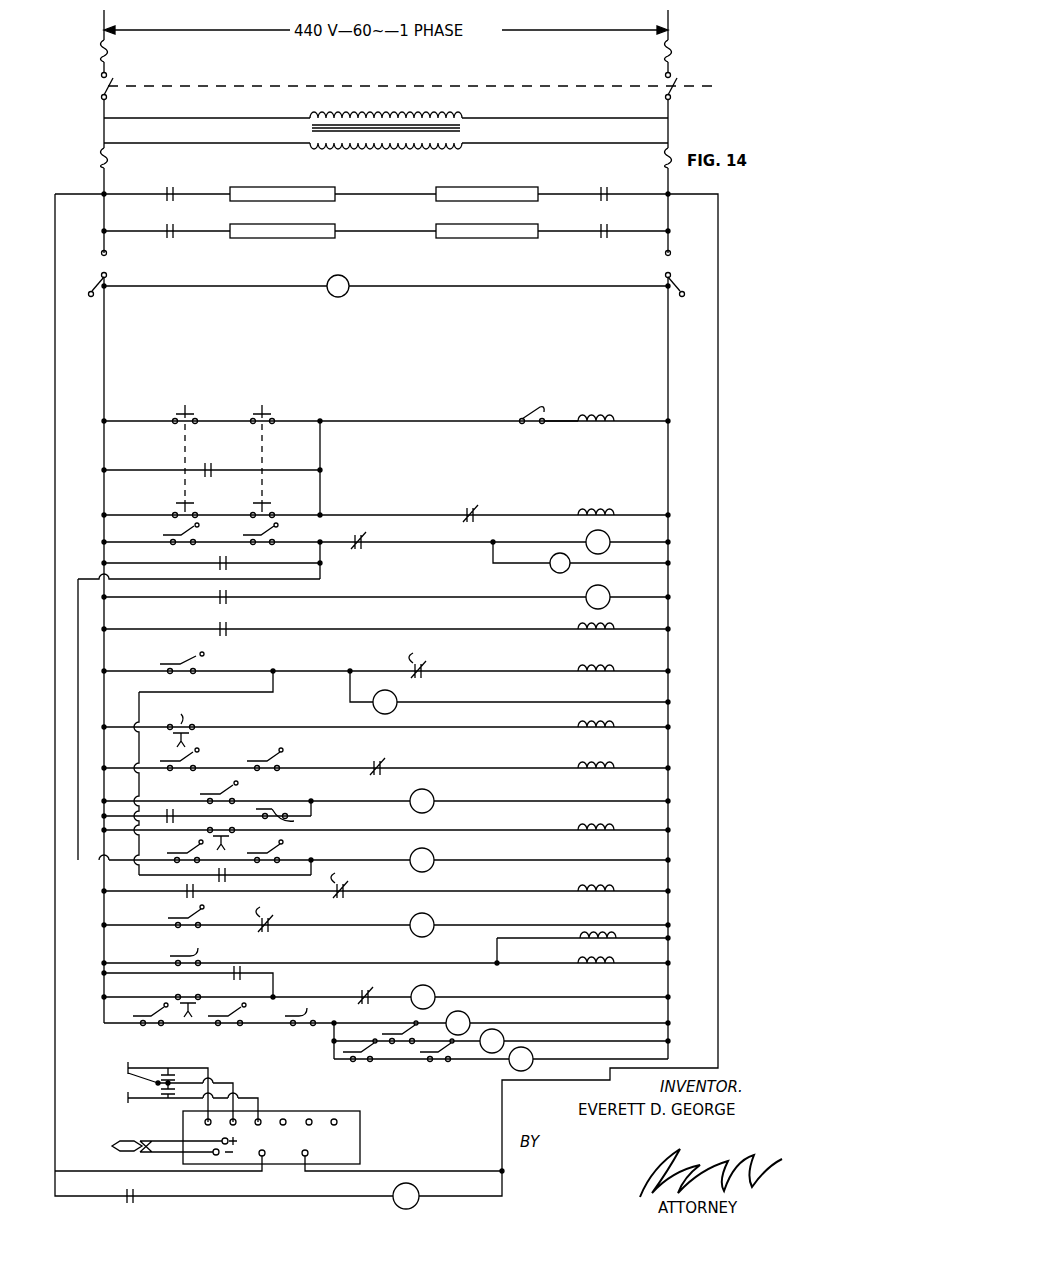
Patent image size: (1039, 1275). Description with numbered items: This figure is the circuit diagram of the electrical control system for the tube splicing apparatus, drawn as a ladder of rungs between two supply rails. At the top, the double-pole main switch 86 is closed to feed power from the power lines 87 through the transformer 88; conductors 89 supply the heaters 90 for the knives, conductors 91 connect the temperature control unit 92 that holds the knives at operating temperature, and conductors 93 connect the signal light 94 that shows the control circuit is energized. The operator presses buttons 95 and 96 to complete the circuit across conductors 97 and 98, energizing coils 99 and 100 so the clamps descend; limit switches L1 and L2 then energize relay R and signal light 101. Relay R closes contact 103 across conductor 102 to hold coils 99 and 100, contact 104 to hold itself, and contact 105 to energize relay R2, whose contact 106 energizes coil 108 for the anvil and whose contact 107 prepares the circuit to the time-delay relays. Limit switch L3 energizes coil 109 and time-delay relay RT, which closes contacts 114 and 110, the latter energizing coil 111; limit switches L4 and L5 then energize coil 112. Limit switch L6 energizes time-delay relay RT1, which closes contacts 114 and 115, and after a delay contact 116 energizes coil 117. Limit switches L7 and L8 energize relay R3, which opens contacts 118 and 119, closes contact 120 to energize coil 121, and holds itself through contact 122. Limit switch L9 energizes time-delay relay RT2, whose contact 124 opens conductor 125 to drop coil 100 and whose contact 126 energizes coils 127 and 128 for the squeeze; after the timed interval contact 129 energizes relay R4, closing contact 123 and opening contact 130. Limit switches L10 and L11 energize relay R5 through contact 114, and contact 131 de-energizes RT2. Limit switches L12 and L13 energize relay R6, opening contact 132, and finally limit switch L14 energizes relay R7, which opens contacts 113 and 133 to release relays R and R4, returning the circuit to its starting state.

The double-pole main switch 86 is at (112, 85).
The power lines 87 is at (104, 45).
The transformer 88 is at (388, 131).
The conductors 89 is at (128, 195).
The heaters 90 is at (287, 189).
The conductors 91 is at (55, 618).
The temperature control unit 92 is at (353, 1124).
The conductors 93 is at (224, 288).
The signal light 94 is at (338, 286).
The button 95 is at (184, 408).
The button 96 is at (262, 408).
The conductor 97 is at (425, 421).
The conductor 98 is at (411, 513).
The coil 99 is at (599, 508).
The coil 100 is at (604, 418).
The signal light 101 is at (553, 569).
The conductor 102 is at (320, 494).
The normally open contact 103 is at (214, 472).
The normally open contact 104 is at (221, 559).
The normally open contact 105 is at (222, 601).
The normally open contact 106 is at (228, 633).
The normally open contact 107 is at (167, 813).
The coil 108 is at (576, 626).
The coil 109 is at (609, 664).
The contact 110 is at (180, 724).
The coil 111 is at (612, 727).
The solenoid valve coil 112 is at (607, 763).
The contact 113 is at (362, 542).
The contact 114 is at (310, 1010).
The contact 115 is at (296, 821).
The contact 116 is at (226, 835).
The coil 117 is at (609, 826).
The contact 118 is at (416, 656).
The contact 119 is at (374, 762).
The contact 120 is at (193, 896).
The coil 121 is at (608, 886).
The contact 122 is at (218, 878).
The contact 123 is at (240, 972).
The contact 124 is at (543, 410).
The conductor 125 is at (559, 424).
The contact 126 is at (193, 954).
The coil 127 is at (610, 940).
The coil 128 is at (586, 963).
The contact 129 is at (196, 990).
The contact 130 is at (467, 507).
The contact 131 is at (260, 918).
The contact 132 is at (334, 876).
The contact 133 is at (364, 992).
The relay R is at (386, 542).
The relay R2 is at (603, 594).
The relay R3 is at (429, 857).
The relay R4 is at (430, 992).
The relay R5 is at (464, 1018).
The relay R6 is at (528, 1057).
The relay R7 is at (497, 1037).
The time-delay relay RT is at (394, 699).
The time-delay relay RT1 is at (429, 798).
The time-delay relay RT2 is at (429, 920).
The limit switch L1 is at (166, 531).
The limit switch L2 is at (280, 531).
The limit switch L3 is at (192, 657).
The limit switch L4 is at (191, 757).
The limit switch L5 is at (277, 757).
The limit switch L6 is at (246, 789).
The limit switch L7 is at (192, 850).
The limit switch L8 is at (275, 850).
The limit switch L9 is at (196, 916).
The limit switch L10 is at (148, 1010).
The limit switch L11 is at (243, 1014).
The limit switch L12 is at (360, 1061).
The limit switch L13 is at (437, 1061).
The limit switch L14 is at (390, 1031).